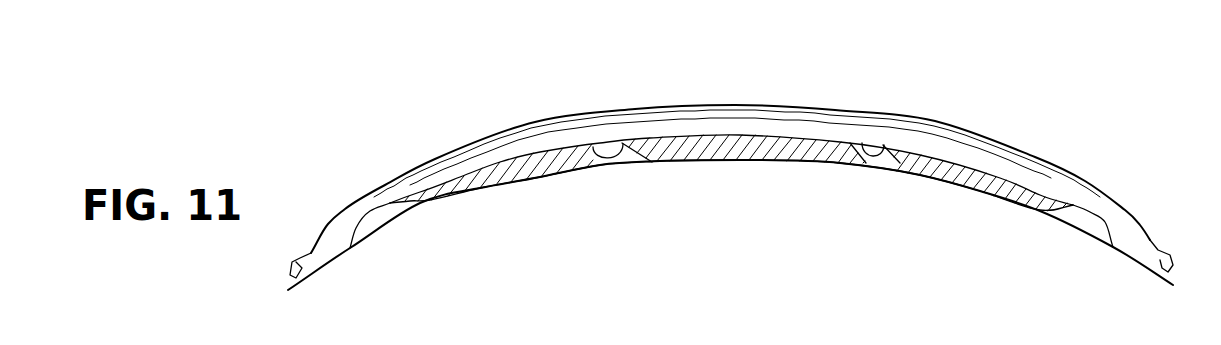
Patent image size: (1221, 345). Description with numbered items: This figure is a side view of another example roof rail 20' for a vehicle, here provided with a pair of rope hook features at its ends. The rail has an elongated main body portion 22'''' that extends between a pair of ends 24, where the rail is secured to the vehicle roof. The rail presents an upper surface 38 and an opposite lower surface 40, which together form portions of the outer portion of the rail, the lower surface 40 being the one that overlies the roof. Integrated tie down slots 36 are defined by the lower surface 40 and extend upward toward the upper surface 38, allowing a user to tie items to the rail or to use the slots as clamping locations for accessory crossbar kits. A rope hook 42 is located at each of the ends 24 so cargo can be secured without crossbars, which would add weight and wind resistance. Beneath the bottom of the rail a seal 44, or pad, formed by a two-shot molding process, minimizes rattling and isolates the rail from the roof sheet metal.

The roof rail 20' is at (730, 168).
The main body portion 22'''' is at (737, 116).
The ends 24 is at (342, 210).
The tie down slots 36 is at (623, 143).
The upper surface 38 is at (508, 130).
The lower surface 40 is at (490, 193).
The rope hook 42 is at (292, 260).
The seal 44 is at (713, 158).